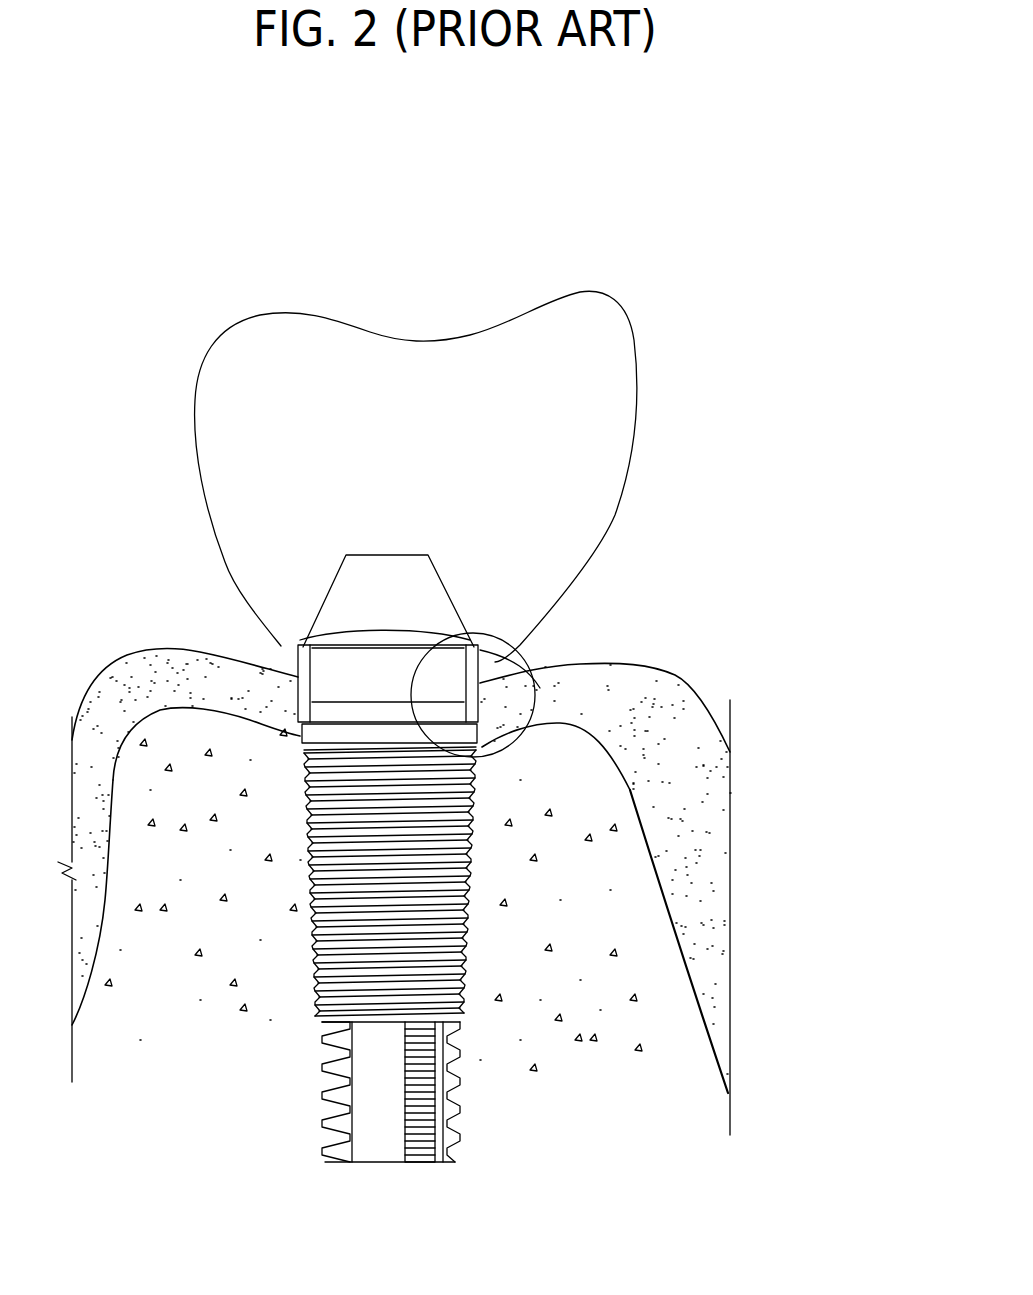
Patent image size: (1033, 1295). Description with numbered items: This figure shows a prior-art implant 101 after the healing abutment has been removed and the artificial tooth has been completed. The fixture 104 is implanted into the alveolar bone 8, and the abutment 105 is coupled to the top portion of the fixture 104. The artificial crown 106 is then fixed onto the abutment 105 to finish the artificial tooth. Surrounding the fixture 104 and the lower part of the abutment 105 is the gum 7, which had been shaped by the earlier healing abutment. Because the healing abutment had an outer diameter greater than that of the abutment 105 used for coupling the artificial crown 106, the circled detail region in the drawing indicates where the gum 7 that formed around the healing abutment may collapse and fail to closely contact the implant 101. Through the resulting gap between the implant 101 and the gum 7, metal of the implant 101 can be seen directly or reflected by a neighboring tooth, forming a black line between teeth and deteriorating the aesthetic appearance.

The implant 101 is at (172, 500).
The artificial crown 106 is at (623, 321).
The abutment 105 is at (450, 582).
The fixture 104 is at (478, 957).
The gum 7 is at (693, 787).
The alveolar bone 8 is at (605, 871).